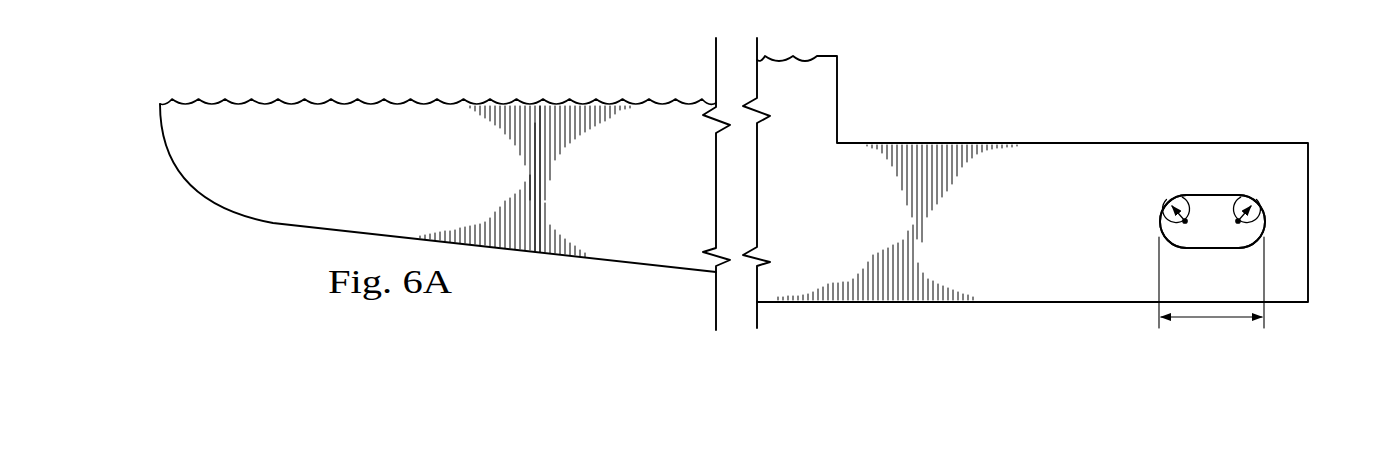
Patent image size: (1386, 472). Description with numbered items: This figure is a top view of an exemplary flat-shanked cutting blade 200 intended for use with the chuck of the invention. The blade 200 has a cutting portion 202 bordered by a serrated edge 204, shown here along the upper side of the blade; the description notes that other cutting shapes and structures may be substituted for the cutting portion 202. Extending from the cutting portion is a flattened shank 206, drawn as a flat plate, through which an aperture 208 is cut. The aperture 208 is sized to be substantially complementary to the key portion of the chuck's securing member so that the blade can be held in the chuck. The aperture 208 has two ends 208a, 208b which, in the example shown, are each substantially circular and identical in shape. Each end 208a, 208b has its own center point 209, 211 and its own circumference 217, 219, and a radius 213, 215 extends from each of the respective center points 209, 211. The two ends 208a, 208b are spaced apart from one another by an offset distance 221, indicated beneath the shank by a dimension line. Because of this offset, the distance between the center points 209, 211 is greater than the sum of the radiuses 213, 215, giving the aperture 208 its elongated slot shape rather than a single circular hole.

The blade 200 is at (451, 69).
The cutting portion 202 is at (322, 170).
The serrated edge 204 is at (212, 104).
The flattened shank 206 is at (1056, 142).
The aperture 208 is at (1210, 184).
The first end of aperture 208a is at (1146, 237).
The second end of aperture 208b is at (1275, 239).
The center point 209 is at (1182, 196).
The center point 211 is at (1245, 196).
The radius 213 is at (1162, 215).
The radius 215 is at (1262, 218).
The circumference 217 is at (1160, 226).
The circumference 219 is at (1267, 227).
The offset distance 221 is at (1212, 320).